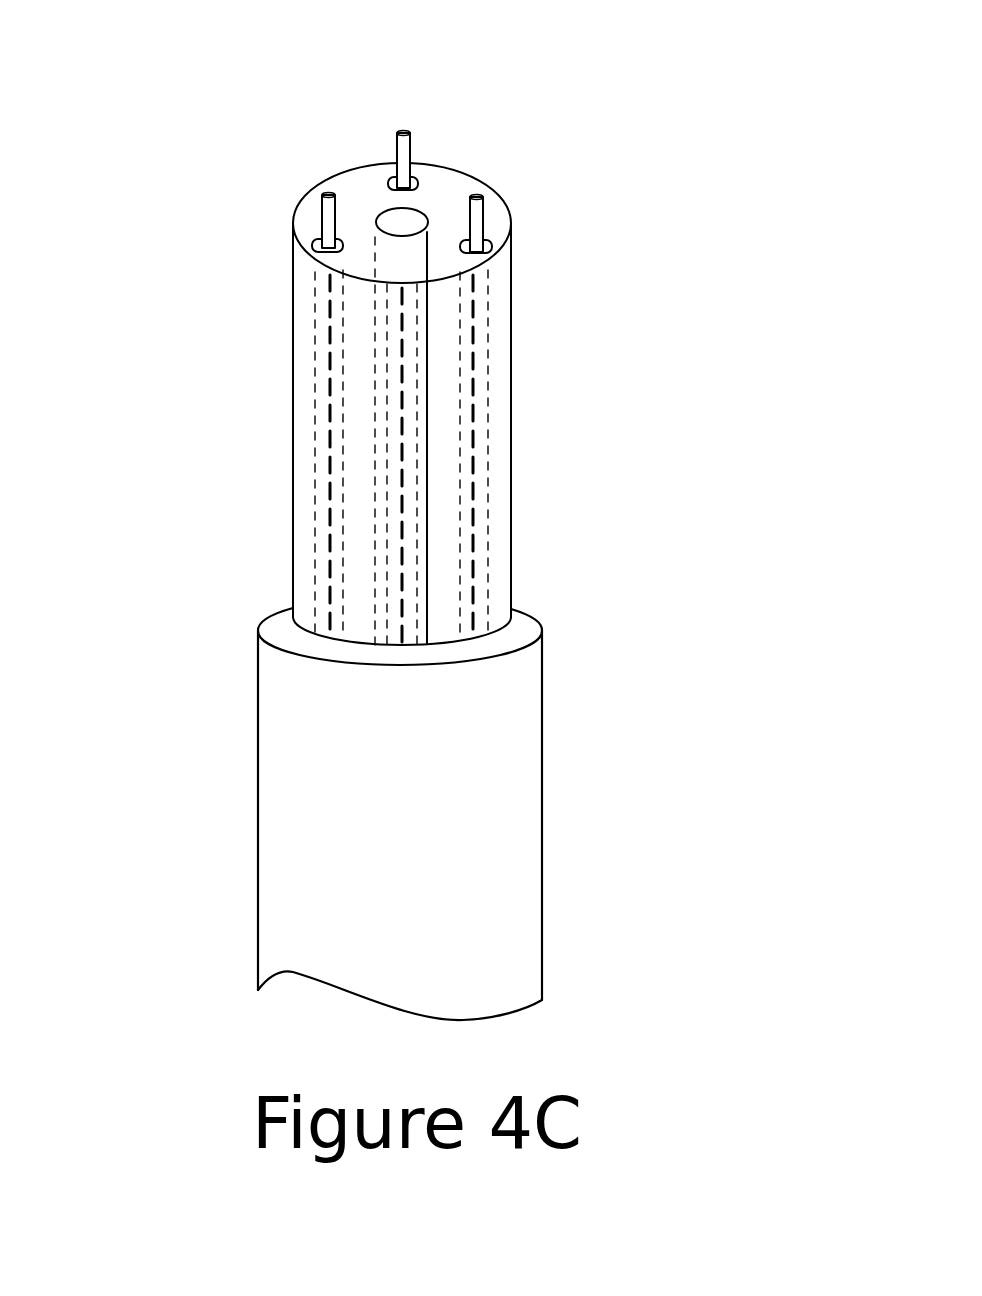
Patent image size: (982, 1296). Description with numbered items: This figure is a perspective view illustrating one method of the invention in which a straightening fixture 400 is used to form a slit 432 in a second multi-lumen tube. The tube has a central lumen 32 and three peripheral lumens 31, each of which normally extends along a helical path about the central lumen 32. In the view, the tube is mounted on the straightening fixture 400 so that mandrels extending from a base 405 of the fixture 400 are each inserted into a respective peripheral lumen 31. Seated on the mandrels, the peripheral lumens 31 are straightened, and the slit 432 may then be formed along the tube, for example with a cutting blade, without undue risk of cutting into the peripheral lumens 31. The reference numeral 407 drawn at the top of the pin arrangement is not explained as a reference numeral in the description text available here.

The straightening fixture 400 is at (187, 643).
The base 405 is at (512, 828).
The pin arrangement 407 is at (475, 188).
The peripheral lumens 31 is at (310, 240).
The central lumen 32 is at (407, 222).
The slit 432 is at (427, 505).